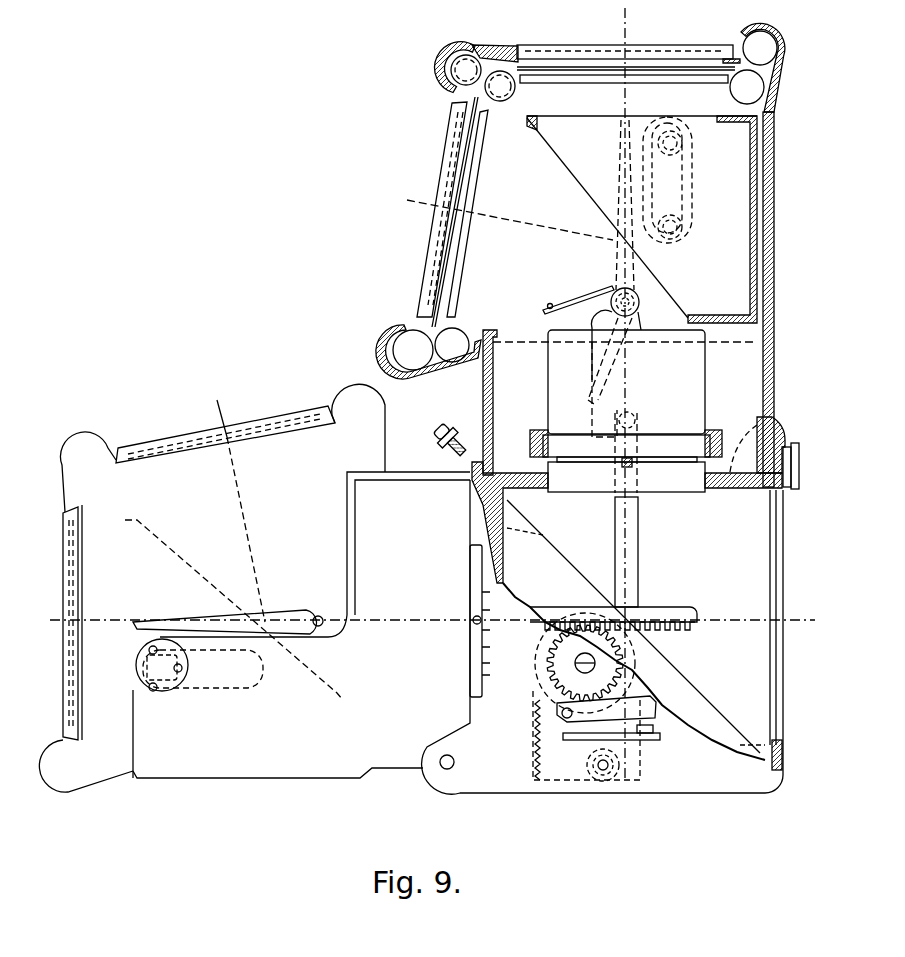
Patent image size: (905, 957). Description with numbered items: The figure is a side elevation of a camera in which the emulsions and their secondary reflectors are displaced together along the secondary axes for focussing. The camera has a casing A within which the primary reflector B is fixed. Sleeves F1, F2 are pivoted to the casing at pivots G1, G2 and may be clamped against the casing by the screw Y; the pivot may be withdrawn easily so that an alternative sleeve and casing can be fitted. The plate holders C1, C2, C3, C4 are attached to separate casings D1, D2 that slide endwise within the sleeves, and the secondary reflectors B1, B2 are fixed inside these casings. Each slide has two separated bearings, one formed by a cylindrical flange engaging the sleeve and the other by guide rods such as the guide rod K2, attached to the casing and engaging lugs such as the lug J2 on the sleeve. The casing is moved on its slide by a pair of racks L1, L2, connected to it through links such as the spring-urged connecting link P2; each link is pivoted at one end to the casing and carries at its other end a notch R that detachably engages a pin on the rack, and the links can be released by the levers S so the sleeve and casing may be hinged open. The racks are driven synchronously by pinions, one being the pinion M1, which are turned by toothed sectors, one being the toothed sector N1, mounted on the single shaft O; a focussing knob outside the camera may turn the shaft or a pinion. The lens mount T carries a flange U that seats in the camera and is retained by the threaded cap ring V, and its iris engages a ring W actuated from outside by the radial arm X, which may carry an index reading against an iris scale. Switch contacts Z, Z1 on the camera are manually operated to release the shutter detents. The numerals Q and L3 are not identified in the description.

The plate holder C1 is at (642, 50).
The casing D1 is at (768, 36).
The sleeve F1 is at (775, 137).
The plate holder C2 is at (447, 142).
The lug J2 is at (680, 146).
The guide rod K2 is at (678, 180).
The secondary reflector B1 is at (631, 250).
The lever S is at (640, 296).
The pivot pin Q is at (641, 302).
The threaded cap ring V is at (547, 432).
The connecting link P2 is at (602, 396).
The flange U is at (676, 446).
The notch R is at (640, 420).
The pivot G1 is at (781, 424).
The ring W is at (512, 470).
The screw Y is at (442, 440).
The lens mount T is at (666, 479).
The rack L1 is at (633, 597).
The rack L2 is at (622, 527).
The rack L3 is at (690, 618).
The pinion M1 is at (597, 652).
The radial arm X is at (473, 627).
The primary reflector B is at (665, 683).
The switch contact Z is at (660, 708).
The switch contact Z1 is at (646, 735).
The shaft O is at (607, 771).
The toothed sector N1 is at (573, 770).
The casing A is at (722, 792).
The pivot G2 is at (442, 768).
The sleeve F2 is at (258, 771).
The casing D2 is at (70, 779).
The plate holder C4 is at (66, 548).
The secondary reflector B2 is at (167, 543).
The plate holder C3 is at (187, 437).